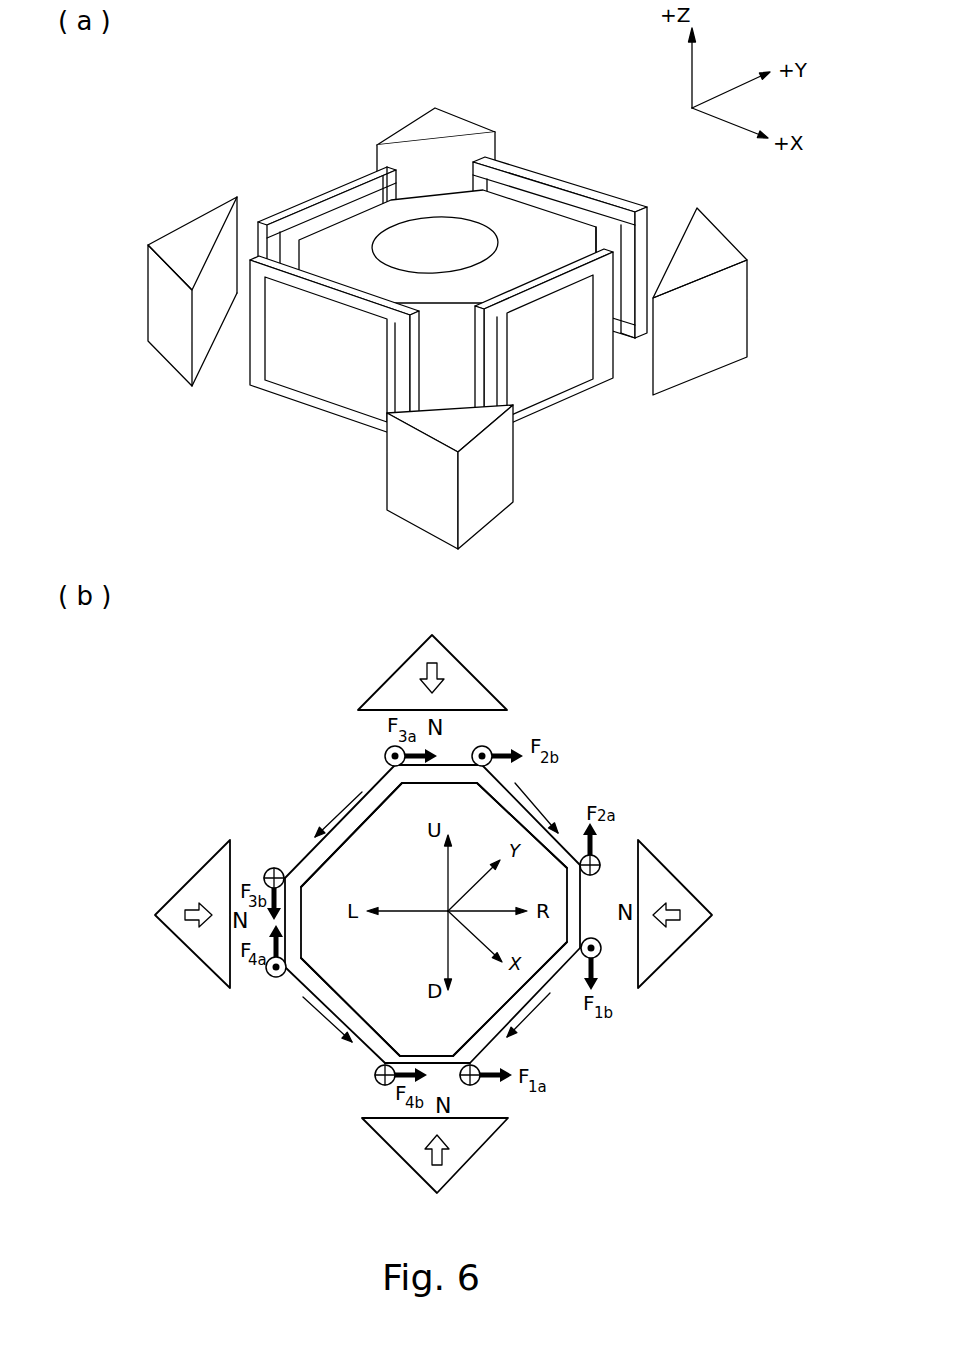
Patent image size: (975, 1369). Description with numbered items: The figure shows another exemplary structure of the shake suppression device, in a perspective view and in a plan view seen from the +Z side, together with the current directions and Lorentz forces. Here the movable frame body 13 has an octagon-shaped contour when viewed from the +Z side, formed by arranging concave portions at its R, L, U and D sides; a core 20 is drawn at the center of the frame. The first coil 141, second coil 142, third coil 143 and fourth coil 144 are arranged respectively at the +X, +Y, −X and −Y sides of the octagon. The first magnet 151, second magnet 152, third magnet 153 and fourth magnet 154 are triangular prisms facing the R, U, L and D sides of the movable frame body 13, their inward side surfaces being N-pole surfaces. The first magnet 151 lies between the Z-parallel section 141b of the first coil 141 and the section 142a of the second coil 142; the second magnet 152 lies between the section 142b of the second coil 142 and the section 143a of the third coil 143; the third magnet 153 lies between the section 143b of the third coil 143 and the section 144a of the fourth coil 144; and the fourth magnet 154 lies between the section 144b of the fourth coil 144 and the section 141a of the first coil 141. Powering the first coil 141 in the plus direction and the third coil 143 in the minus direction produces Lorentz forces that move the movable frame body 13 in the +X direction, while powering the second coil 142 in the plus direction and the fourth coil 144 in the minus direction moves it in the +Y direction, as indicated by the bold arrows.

The movable frame body 13 is at (615, 212).
The core (yoke) 20 is at (505, 220).
The first coil 141 is at (560, 387).
The section of the first coil 141a is at (476, 1082).
The section of the first coil 141b is at (600, 953).
The second coil 142 is at (522, 165).
The section of the second coil 142a is at (601, 857).
The section of the second coil 142b is at (492, 748).
The third coil 143 is at (342, 185).
The section of the third coil 143a is at (391, 752).
The section of the third coil 143b is at (270, 869).
The fourth coil 144 is at (292, 397).
The section of the fourth coil 144a is at (272, 973).
The section of the fourth coil 144b is at (378, 1083).
The first magnet 151 is at (723, 320).
The second magnet 152 is at (452, 107).
The third magnet 153 is at (178, 330).
The fourth magnet 154 is at (498, 482).